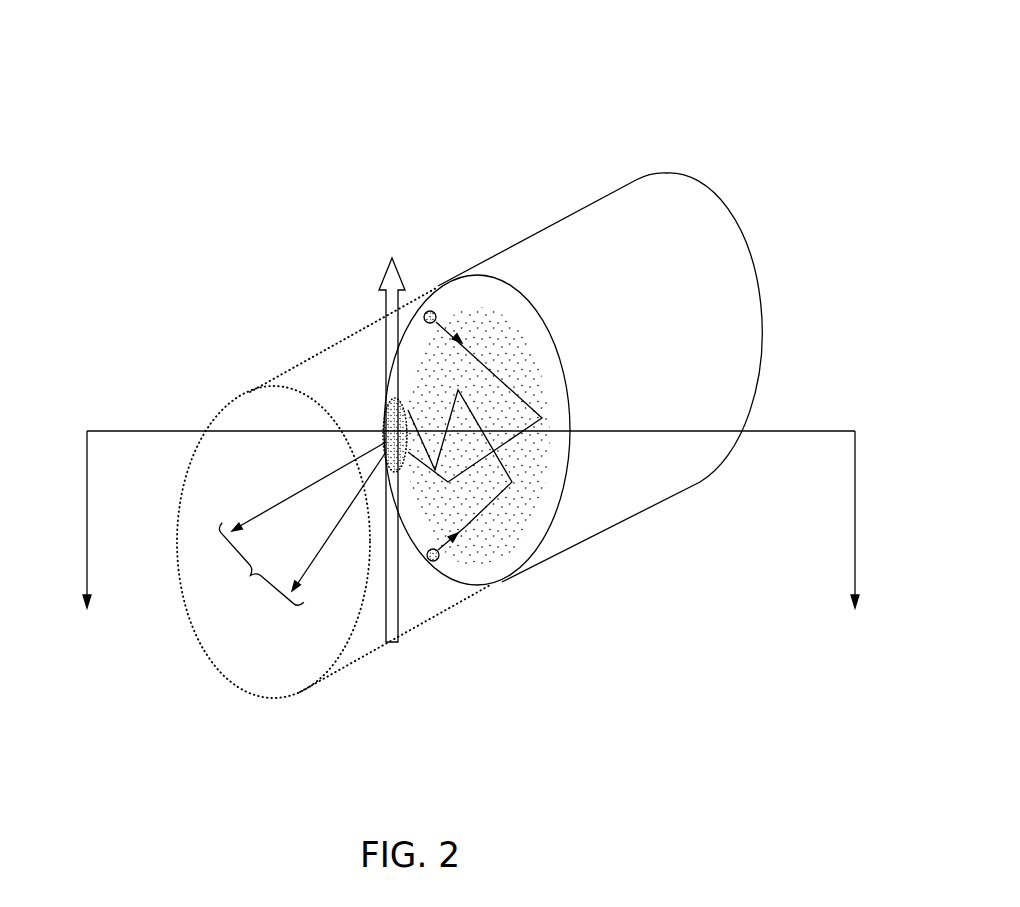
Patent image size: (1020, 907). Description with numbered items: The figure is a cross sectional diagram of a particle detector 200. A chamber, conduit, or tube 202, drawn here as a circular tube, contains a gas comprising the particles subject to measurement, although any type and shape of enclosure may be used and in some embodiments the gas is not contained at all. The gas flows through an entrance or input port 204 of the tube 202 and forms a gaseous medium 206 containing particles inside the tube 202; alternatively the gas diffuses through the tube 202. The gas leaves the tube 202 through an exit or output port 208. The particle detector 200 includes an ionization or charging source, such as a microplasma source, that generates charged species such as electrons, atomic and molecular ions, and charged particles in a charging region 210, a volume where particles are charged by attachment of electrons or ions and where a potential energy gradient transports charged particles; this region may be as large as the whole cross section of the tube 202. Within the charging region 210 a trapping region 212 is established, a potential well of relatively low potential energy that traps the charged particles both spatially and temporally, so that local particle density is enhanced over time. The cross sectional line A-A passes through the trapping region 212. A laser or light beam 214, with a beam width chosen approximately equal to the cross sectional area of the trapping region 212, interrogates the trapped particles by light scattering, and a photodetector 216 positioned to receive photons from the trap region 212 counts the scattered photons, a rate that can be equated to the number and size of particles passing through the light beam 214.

The particle detector 200 is at (498, 60).
The tube 202 is at (566, 214).
The input port 204 is at (220, 409).
The gaseous medium 206 is at (483, 538).
The output port 208 is at (641, 175).
The charging region 210 is at (483, 422).
The trapping region 212 is at (376, 407).
The laser beam 214 is at (403, 615).
The photodetector 216 is at (226, 597).